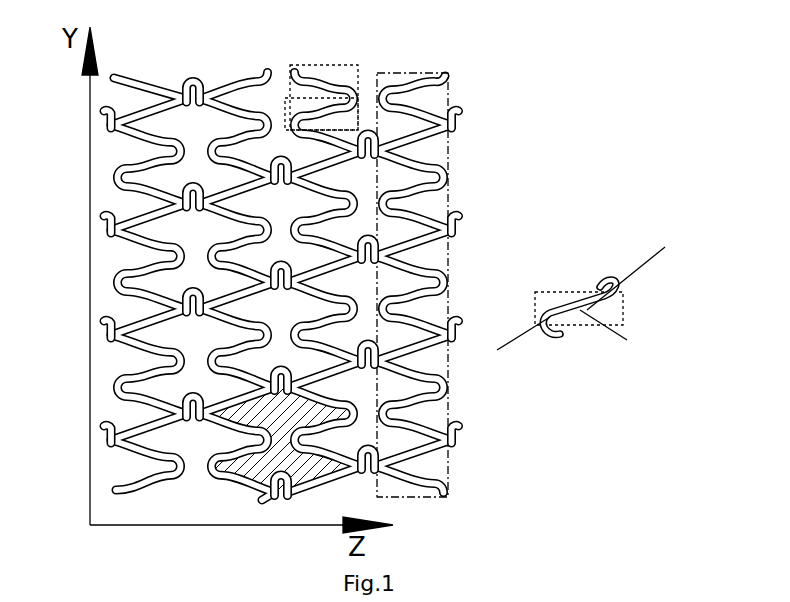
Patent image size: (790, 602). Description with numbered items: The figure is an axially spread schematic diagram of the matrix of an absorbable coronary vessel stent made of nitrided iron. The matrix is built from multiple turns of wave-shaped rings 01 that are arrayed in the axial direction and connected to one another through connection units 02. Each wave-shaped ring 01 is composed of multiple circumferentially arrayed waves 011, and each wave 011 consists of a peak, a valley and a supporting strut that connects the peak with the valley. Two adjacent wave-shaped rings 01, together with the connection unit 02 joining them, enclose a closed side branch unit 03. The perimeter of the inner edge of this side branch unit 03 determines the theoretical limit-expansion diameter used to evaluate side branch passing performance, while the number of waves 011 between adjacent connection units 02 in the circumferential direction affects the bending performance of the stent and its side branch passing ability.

The wave-shaped ring 01 is at (446, 73).
The wave 011 is at (291, 112).
The connection unit 02 is at (186, 80).
The side branch unit 03 is at (236, 481).